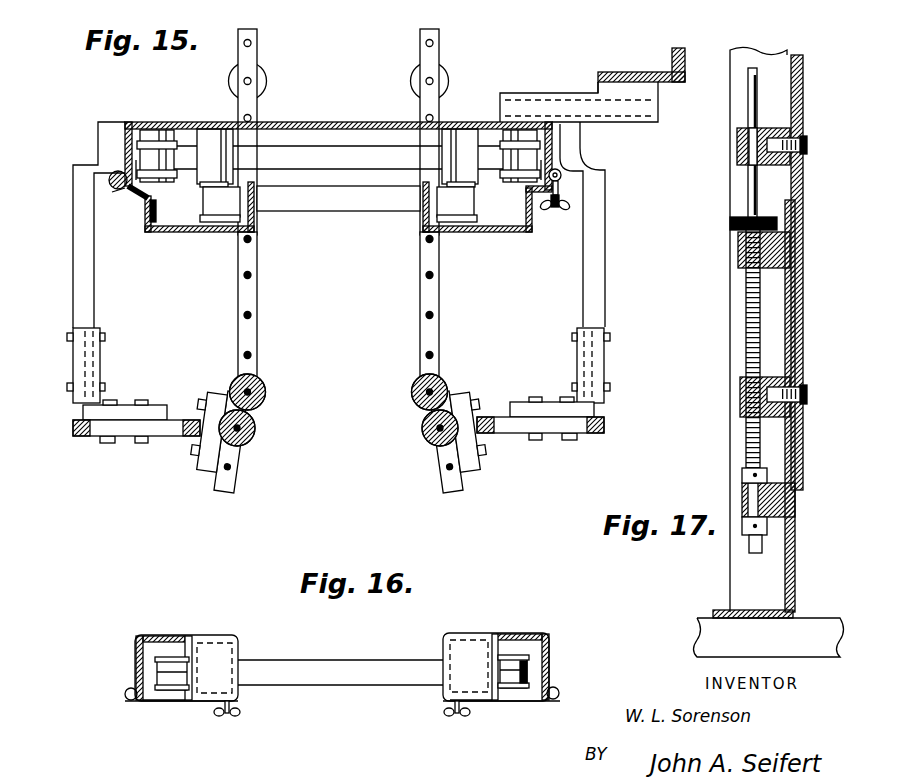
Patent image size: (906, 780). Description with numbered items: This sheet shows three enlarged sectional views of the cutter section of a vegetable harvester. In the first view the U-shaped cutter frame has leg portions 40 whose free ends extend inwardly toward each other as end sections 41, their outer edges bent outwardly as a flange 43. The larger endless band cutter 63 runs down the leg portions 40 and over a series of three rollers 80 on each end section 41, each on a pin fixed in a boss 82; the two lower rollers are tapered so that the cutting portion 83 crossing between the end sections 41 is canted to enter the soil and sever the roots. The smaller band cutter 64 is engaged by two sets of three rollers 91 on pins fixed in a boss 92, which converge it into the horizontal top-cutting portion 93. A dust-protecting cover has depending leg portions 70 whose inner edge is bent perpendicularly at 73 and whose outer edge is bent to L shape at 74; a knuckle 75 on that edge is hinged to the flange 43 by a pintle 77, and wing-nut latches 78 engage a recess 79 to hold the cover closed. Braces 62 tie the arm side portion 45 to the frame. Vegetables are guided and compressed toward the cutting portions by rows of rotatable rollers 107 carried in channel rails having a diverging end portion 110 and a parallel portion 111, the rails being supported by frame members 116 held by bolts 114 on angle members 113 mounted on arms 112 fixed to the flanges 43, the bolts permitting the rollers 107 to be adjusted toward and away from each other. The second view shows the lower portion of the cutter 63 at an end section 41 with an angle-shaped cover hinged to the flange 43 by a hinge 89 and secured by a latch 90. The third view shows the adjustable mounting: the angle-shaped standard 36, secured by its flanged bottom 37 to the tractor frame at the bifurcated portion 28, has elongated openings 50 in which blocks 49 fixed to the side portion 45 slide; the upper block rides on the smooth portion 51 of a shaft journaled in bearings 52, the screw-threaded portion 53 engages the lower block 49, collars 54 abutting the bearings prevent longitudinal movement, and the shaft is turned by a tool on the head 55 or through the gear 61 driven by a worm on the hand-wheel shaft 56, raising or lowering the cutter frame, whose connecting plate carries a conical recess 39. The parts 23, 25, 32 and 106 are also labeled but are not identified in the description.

In FIG. 17, the base 23 is at (702, 637).
In FIG. 15, the frame member 25 is at (250, 6).
In FIG. 16, the bifurcated portion 28 is at (492, 700).
In FIG. 16, the housing bottom 32 is at (153, 703).
In FIG. 15, the standard 36 is at (682, 55).
In FIG. 17, the standard 36 is at (795, 550).
In FIG. 17, the flanged bottom 37 is at (713, 610).
In FIG. 16, the central conical recess 39 is at (557, 693).
In FIG. 15, the leg portions 40 is at (140, 122).
In FIG. 16, the inwardly extending end sections 41 is at (167, 638).
In FIG. 15, the flange 43 is at (120, 136).
In FIG. 16, the flange 43 is at (140, 657).
In FIG. 15, the side portion of arm 45 is at (598, 87).
In FIG. 17, the side portion of arm 45 is at (803, 106).
In FIG. 17, the blocks 49 is at (737, 147).
In FIG. 17, the elongated openings 50 is at (783, 67).
In FIG. 17, the smooth surfaced shaft portion 51 is at (753, 192).
In FIG. 17, the bearings 52 is at (738, 247).
In FIG. 17, the screw threaded shaft portion 53 is at (747, 433).
In FIG. 17, the collars 54 is at (745, 475).
In FIG. 17, the head 55 is at (745, 547).
In FIG. 15, the shaft 56 is at (621, 11).
In FIG. 17, the gear 61 is at (730, 223).
In FIG. 15, the braces 62 is at (530, 97).
In FIG. 15, the band cutter 63 is at (136, 165).
In FIG. 16, the band cutter 63 is at (157, 672).
In FIG. 15, the band cutter 64 is at (150, 233).
In FIG. 15, the cover leg portions 70 is at (183, 233).
In FIG. 15, the perpendicular inner edge section 73 is at (258, 200).
In FIG. 15, the L-shaped outer edge section 74 is at (130, 234).
In FIG. 15, the knuckle 75 is at (112, 182).
In FIG. 15, the pintle 77 is at (112, 192).
In FIG. 15, the latches 78 is at (568, 208).
In FIG. 15, the recess 79 is at (562, 190).
In FIG. 15, the rollers 80 is at (154, 150).
In FIG. 16, the rollers 80 is at (180, 683).
In FIG. 15, the boss 82 is at (172, 145).
In FIG. 16, the boss 82 is at (157, 640).
In FIG. 16, the cutting portion 83 is at (353, 678).
In FIG. 16, the hinge 89 is at (132, 697).
In FIG. 16, the latch 90 is at (227, 720).
In FIG. 15, the rollers 91 is at (218, 213).
In FIG. 15, the boss 92 is at (210, 135).
In FIG. 15, the horizontal cutting portion 93 is at (343, 200).
In FIG. 15, the roller 106 is at (339, 51).
In FIG. 15, the rollers 107 is at (258, 437).
In FIG. 15, the diverging rail portion 110 is at (237, 478).
In FIG. 15, the parallel rail portion 111 is at (254, 298).
In FIG. 15, the arms 112 is at (100, 312).
In FIG. 15, the angle members 113 is at (127, 404).
In FIG. 15, the bolts 114 is at (145, 399).
In FIG. 15, the frame members 116 is at (170, 432).